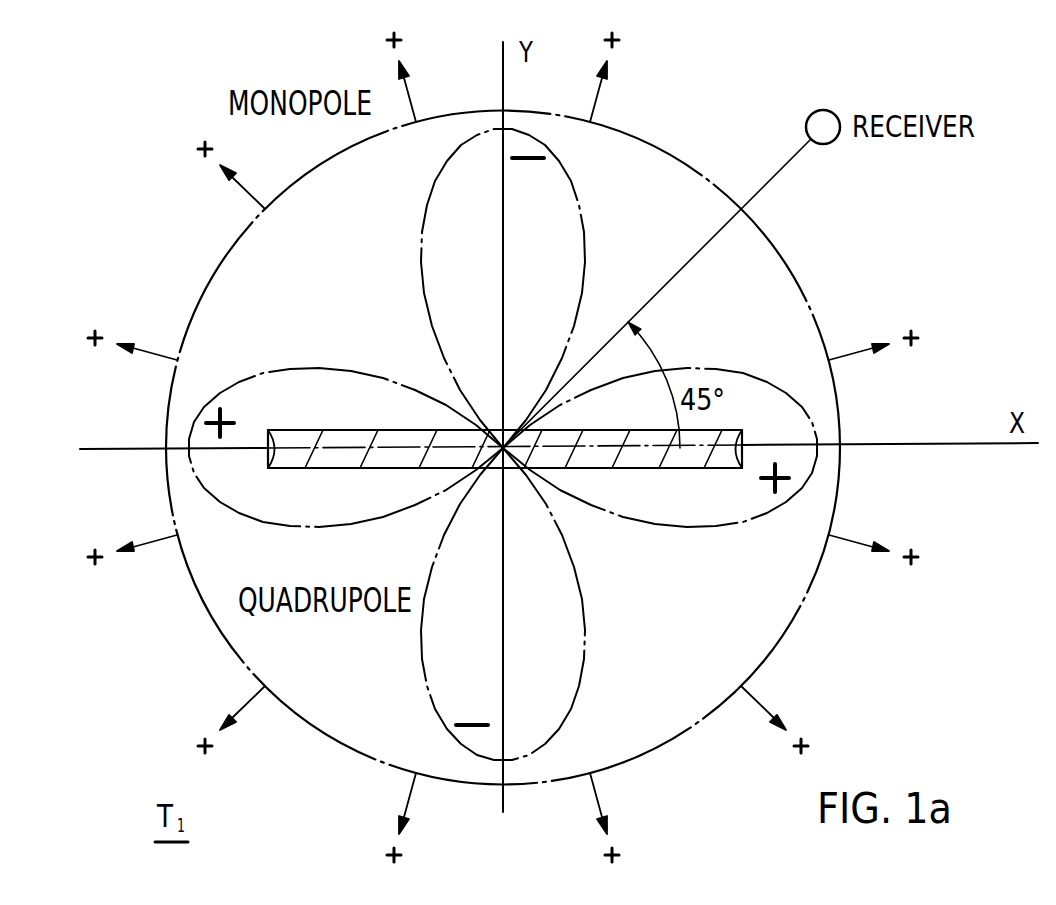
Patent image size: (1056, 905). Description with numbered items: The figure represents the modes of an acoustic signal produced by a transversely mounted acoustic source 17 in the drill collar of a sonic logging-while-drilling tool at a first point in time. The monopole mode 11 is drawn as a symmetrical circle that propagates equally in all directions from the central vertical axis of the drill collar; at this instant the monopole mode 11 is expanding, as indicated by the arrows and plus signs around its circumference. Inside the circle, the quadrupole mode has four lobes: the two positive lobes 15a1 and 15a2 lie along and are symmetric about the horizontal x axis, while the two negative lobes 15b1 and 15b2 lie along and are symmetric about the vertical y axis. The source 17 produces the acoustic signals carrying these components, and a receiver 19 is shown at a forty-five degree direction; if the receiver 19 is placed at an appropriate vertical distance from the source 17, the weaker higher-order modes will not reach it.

The monopole mode 11 is at (210, 280).
The positive lobe 15a1 is at (700, 528).
The positive lobe 15a2 is at (343, 370).
The negative lobe 15b1 is at (586, 264).
The negative lobe 15b2 is at (430, 700).
The source 17 is at (305, 430).
The receiver 19 is at (827, 110).